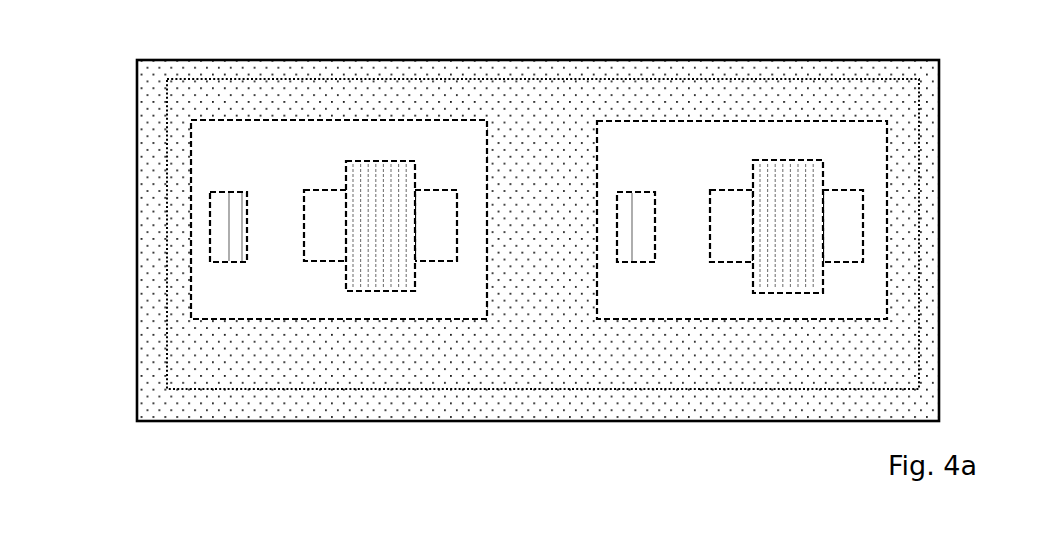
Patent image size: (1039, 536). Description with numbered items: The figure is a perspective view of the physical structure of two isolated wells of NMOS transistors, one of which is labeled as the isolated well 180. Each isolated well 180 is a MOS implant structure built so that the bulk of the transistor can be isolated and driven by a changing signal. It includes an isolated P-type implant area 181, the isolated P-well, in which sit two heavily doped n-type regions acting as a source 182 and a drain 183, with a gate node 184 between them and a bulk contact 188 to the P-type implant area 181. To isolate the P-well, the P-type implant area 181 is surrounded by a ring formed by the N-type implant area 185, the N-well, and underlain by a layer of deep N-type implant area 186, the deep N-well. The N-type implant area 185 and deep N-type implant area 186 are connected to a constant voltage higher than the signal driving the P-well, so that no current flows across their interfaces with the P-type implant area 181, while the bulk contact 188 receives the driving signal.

The isolated well 180 is at (1022, 93).
The isolated P-type implant area 181 is at (222, 163).
The source 182 is at (322, 237).
The drain 183 is at (443, 237).
The gate node 184 is at (378, 257).
The N-type implant area 185 is at (152, 359).
The deep N-type implant area 186 is at (166, 292).
The bulk contact 188 is at (217, 227).